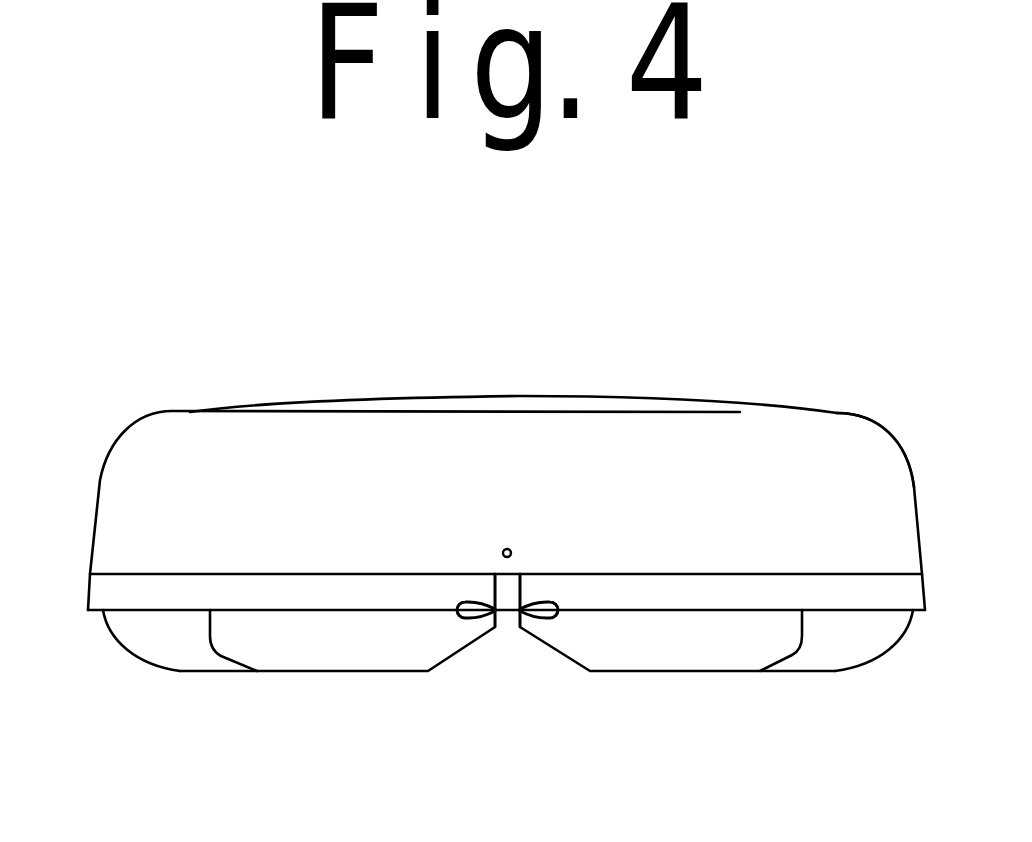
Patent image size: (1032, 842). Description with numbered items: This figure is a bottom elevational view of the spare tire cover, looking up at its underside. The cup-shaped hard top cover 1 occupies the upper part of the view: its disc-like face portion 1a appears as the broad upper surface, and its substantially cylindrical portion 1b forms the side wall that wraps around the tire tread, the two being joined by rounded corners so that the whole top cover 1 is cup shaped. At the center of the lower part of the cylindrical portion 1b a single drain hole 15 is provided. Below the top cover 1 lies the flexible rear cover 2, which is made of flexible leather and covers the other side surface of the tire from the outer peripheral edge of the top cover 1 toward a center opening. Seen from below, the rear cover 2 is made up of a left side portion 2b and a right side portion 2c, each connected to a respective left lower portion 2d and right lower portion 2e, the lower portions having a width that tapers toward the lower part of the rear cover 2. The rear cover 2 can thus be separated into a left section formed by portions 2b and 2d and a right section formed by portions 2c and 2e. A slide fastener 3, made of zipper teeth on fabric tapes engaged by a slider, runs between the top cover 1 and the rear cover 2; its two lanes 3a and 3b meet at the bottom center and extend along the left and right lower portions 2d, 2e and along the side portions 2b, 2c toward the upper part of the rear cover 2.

The top cover 1 is at (223, 409).
The face portion 1a is at (562, 396).
The cylindrical portion 1b is at (817, 431).
The rear cover 2 is at (273, 676).
The left side portion 2b is at (140, 643).
The right side portion 2c is at (852, 655).
The left lower portion 2d is at (330, 657).
The right lower portion 2e is at (657, 657).
The slide fastener 3 is at (514, 624).
The lane 3a is at (495, 574).
The lane 3b is at (520, 574).
The drain hole 15 is at (509, 550).